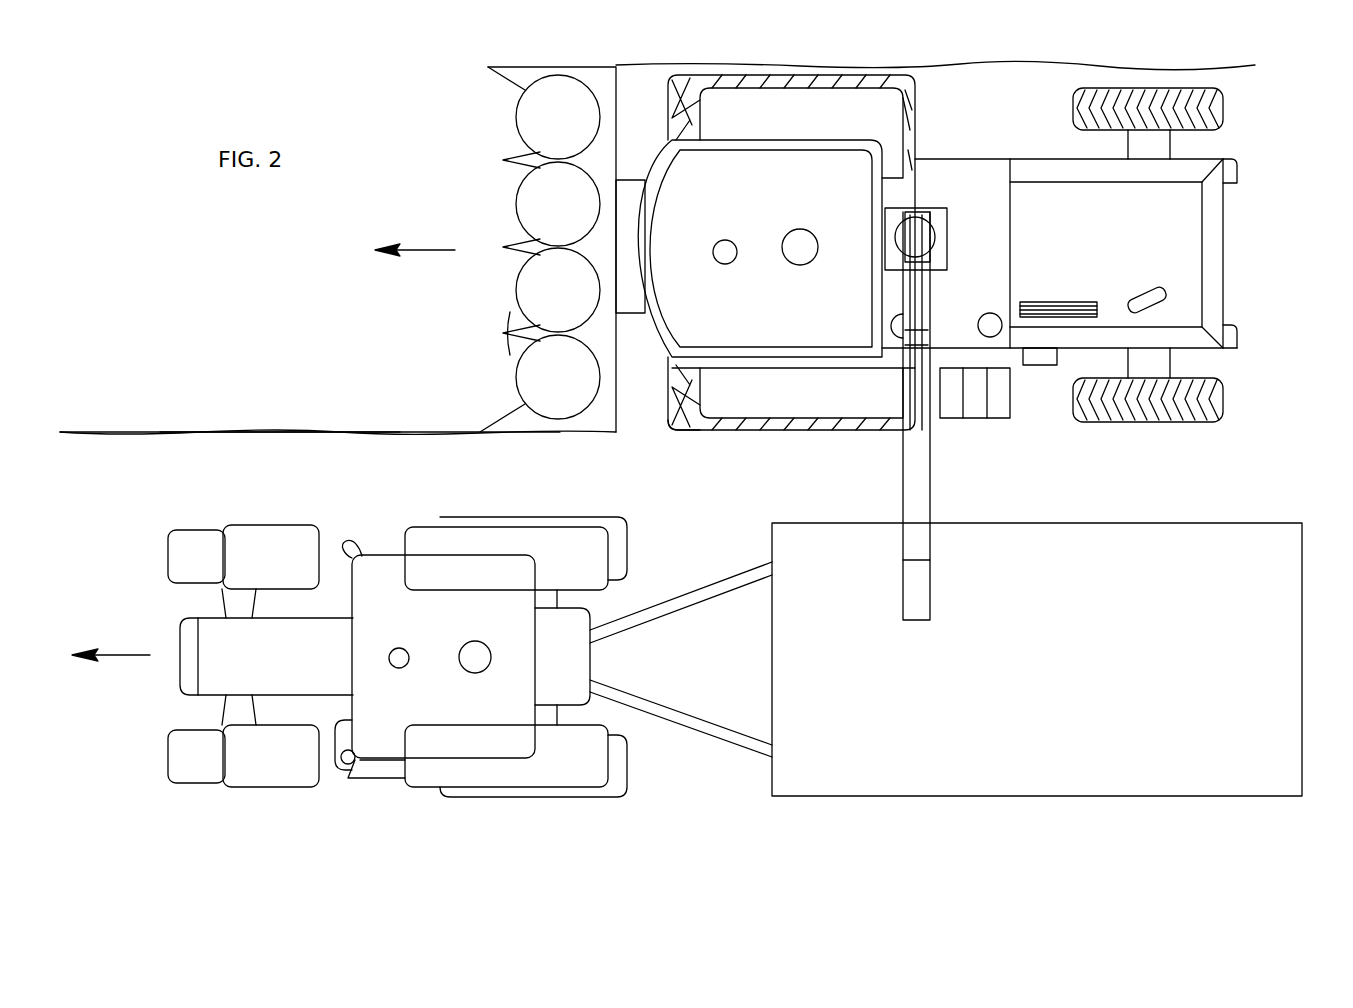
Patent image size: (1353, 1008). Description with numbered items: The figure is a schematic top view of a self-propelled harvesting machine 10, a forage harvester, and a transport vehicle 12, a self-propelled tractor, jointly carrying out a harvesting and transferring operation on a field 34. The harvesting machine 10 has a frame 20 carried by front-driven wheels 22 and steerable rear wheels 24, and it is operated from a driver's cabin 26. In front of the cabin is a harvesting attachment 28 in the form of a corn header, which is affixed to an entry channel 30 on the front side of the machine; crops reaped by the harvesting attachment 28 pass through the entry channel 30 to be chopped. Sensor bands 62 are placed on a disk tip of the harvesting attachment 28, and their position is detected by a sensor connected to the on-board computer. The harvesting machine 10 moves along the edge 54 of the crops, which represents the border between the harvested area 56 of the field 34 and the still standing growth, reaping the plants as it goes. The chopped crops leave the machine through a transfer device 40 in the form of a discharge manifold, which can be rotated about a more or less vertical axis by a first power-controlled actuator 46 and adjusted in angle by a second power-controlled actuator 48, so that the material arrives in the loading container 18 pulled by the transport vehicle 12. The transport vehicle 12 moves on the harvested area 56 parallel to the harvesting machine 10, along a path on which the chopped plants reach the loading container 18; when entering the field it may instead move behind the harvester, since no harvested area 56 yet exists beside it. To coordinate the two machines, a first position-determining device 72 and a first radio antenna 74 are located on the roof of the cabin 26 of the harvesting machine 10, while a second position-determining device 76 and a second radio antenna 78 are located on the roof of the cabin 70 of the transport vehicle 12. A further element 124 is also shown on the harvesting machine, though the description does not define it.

The self-propelled harvesting machine 10 is at (1250, 256).
The transport vehicle 12 is at (315, 807).
The loading container 18 is at (1085, 682).
The frame 20 is at (990, 172).
The front-driven wheels 22 is at (694, 430).
The steerable rear wheels 24 is at (1222, 118).
The driver's cabin 26 is at (772, 216).
The harvesting attachment 28 is at (598, 76).
The entry channel 30 is at (614, 774).
The field 34 is at (223, 286).
The transfer device 40 is at (930, 480).
The first power-controlled actuator 46 is at (947, 258).
The second power-controlled actuator 48 is at (925, 316).
The edge 54 is at (240, 433).
The harvested area 56 is at (113, 549).
The sensor bands 62 is at (505, 322).
The cabin 70 is at (460, 721).
The first position-determining device 72 is at (800, 262).
The first radio antenna 74 is at (723, 263).
The second position-determining device 76 is at (477, 650).
The second radio antenna 78 is at (398, 650).
The sensor 124 is at (1040, 366).